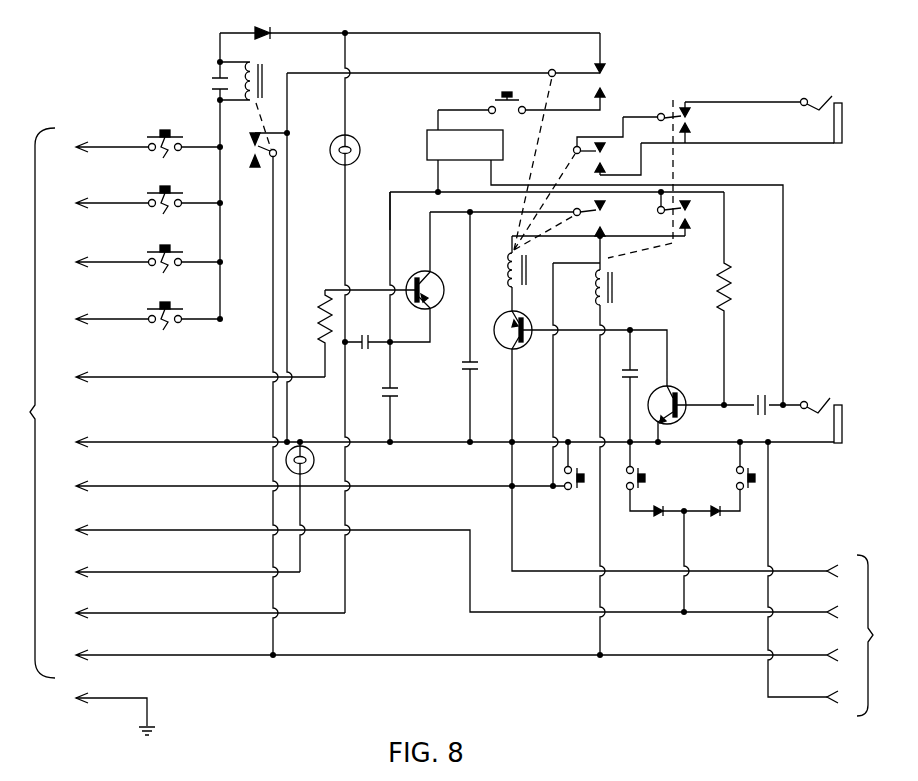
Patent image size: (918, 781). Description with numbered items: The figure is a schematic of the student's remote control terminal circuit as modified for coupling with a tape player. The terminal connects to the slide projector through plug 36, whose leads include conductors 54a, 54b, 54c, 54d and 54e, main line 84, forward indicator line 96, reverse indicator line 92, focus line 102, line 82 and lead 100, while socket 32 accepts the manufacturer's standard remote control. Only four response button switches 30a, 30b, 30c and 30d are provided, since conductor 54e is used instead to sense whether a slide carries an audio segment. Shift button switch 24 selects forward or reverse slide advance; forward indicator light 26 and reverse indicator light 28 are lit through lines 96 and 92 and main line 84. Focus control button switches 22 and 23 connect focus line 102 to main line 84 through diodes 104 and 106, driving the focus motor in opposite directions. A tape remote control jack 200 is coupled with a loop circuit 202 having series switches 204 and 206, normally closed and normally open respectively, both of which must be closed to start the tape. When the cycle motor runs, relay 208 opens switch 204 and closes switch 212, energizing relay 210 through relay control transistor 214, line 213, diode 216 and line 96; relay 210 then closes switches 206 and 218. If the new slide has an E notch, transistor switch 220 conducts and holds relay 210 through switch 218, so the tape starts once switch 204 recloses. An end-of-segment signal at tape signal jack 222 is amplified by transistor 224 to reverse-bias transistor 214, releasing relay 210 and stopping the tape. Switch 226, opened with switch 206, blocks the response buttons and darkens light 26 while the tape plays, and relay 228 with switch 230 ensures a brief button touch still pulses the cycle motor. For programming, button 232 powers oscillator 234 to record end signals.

The conductor 54a is at (94, 147).
The conductor 54b is at (93, 203).
The conductor 54c is at (94, 262).
The conductor 54d is at (93, 319).
The conductor 54e is at (182, 377).
The response button switch 30a is at (183, 155).
The response button switch 30b is at (183, 211).
The response button switch 30c is at (183, 270).
The response button switch 30d is at (183, 327).
The plug 36 is at (33, 403).
The socket 32 is at (877, 635).
The main line 84 is at (454, 570).
The lead 100 is at (453, 529).
The focus line 102 is at (453, 571).
The reverse indicator line 92 is at (174, 572).
The forward indicator line 96 is at (197, 613).
The line 82 is at (454, 655).
The relay 228 is at (253, 62).
The switch 230 is at (257, 167).
The switch 226 is at (566, 73).
The button 232 is at (505, 93).
The oscillator 234 is at (427, 140).
The forward indicator light 26 is at (361, 152).
The switch 206 is at (580, 153).
The switch 204 is at (661, 113).
The tape remote control jack 200 is at (815, 99).
The loop circuit 202 is at (788, 143).
The line 213 is at (390, 232).
The transistor switch 220 is at (412, 276).
The relay 210 is at (507, 270).
The switch 218 is at (592, 239).
The switch 212 is at (656, 210).
The diode 216 is at (378, 316).
The relay control transistor 214 is at (528, 344).
The relay 208 is at (613, 285).
The transistor 224 is at (676, 388).
The tape signal jack 222 is at (814, 400).
The reverse indicator light 28 is at (332, 456).
The shift button switch 24 is at (588, 480).
The focus control button switch 22 is at (645, 478).
The focus control button switch 23 is at (748, 478).
The diode 104 is at (657, 514).
The diode 106 is at (720, 514).